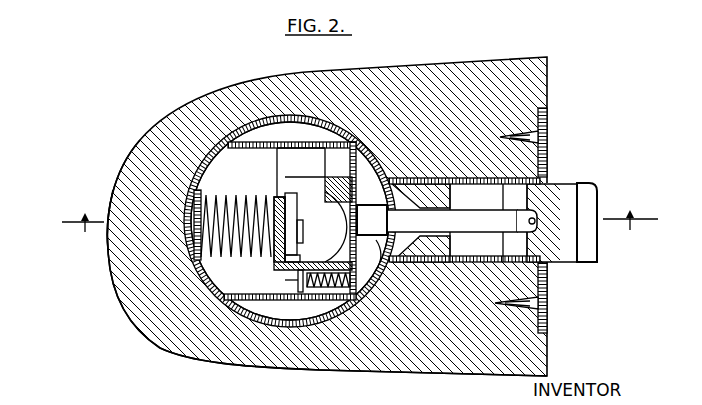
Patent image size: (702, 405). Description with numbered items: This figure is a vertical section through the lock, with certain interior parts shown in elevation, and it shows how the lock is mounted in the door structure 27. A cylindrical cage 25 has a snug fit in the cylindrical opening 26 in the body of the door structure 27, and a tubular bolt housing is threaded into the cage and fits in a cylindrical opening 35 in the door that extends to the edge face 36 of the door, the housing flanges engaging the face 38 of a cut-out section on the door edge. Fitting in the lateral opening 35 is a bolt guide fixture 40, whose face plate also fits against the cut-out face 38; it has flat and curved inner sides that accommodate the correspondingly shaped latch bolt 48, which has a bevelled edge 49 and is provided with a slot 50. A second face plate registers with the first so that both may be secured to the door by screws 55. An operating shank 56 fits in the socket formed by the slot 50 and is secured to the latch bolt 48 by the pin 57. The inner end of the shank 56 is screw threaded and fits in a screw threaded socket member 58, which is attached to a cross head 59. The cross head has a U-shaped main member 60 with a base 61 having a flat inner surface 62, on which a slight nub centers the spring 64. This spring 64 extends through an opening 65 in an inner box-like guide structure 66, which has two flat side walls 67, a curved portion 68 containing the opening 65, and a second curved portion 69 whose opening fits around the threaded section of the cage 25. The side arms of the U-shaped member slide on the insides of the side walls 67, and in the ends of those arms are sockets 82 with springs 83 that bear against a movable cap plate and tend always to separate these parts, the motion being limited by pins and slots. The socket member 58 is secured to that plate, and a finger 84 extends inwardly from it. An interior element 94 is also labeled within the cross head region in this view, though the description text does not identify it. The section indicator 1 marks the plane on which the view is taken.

The section line 1- 1 is at (360, 230).
The cylindrical cage 25 is at (285, 327).
The cylindrical opening 26 is at (250, 320).
The door structure 27 is at (424, 346).
The cylindrical opening 35 is at (431, 199).
The edge face 36 is at (548, 92).
The face of cut-out section 38 is at (530, 158).
The bolt guide fixture 40 is at (533, 270).
The latch bolt 48 is at (589, 250).
The bevelled edge 49 is at (585, 203).
The slot 50 is at (580, 265).
The screws 55 is at (547, 328).
The operating shank 56 is at (473, 216).
The pin 57 is at (534, 218).
The screw threaded socket member 58 is at (373, 236).
The cross head 59 is at (308, 161).
The U-shaped main member 60 is at (272, 162).
The base 61 is at (279, 251).
The flat inner surface 62 is at (280, 268).
The spring 64 is at (246, 204).
The opening 65 is at (196, 199).
The box-like guide structure 66 is at (224, 179).
The flat side walls 67 is at (302, 298).
The curved portion 68 is at (216, 269).
The second curved portion 69 is at (377, 268).
The sockets 82 is at (342, 270).
The springs 83 is at (311, 292).
The finger 84 is at (344, 190).
The valve member 94 is at (297, 221).